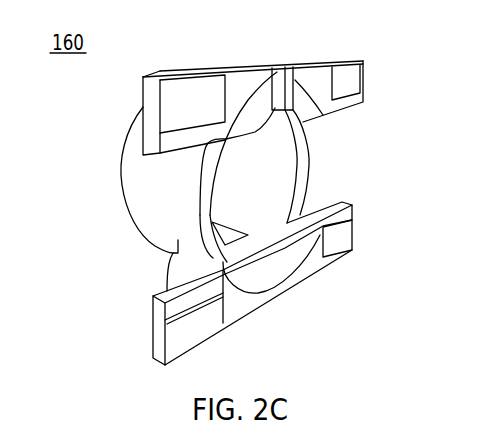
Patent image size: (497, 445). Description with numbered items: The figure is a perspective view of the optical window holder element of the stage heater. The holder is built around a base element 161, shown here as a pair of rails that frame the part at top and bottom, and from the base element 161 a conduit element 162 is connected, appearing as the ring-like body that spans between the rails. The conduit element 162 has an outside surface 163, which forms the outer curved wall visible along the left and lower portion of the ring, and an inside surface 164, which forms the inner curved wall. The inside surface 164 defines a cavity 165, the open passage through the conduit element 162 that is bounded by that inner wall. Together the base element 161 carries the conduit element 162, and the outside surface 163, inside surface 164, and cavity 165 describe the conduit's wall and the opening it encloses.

The base element 161 is at (300, 98).
The conduit element 162 is at (126, 141).
The outside surface 163 is at (177, 207).
The inside surface 164 is at (278, 167).
The cavity 165 is at (238, 203).